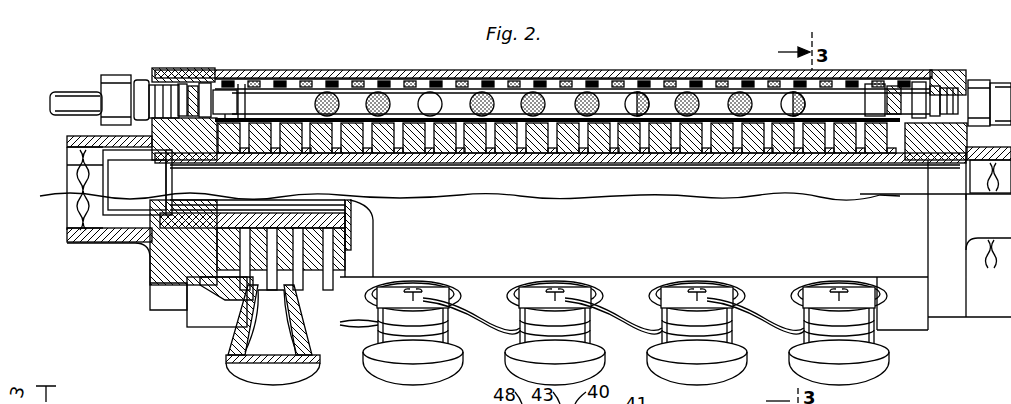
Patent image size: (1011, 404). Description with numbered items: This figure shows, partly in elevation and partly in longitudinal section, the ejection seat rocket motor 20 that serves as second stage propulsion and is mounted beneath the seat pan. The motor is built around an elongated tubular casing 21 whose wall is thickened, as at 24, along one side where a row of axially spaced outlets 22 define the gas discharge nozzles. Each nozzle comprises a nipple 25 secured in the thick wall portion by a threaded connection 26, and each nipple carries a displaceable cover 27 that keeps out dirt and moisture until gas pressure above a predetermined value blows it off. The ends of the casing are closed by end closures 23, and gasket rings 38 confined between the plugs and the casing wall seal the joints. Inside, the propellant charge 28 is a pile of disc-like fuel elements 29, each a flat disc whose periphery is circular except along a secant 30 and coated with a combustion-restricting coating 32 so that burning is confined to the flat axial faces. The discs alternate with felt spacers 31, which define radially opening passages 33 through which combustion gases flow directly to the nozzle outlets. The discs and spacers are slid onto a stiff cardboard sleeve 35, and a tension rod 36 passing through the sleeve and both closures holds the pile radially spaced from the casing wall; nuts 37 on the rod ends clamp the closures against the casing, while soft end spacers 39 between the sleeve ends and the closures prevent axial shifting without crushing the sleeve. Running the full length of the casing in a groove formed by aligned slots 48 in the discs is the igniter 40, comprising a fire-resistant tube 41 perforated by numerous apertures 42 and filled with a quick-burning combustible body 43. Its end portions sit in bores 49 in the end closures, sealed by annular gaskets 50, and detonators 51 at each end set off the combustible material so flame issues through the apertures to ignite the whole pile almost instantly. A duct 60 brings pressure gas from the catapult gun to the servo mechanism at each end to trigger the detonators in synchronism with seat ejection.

The rocket motor 20 is at (908, 302).
The tubular casing 21 is at (634, 307).
The outlets 22 is at (243, 333).
The end closures 23 is at (148, 296).
The thickened casing wall portion 24 is at (903, 322).
The nipples 25 is at (377, 327).
The threaded connection 26 is at (240, 300).
The displaceable cover 27 is at (274, 372).
The propellant charge 28 is at (207, 258).
The fuel elements 29 is at (293, 70).
The secant 30 is at (287, 310).
The spacers 31 is at (270, 146).
The coating 32 is at (603, 80).
The radially opening passages 33 is at (497, 128).
The sleeve 35 is at (917, 80).
The tension rod 36 is at (212, 196).
The nuts 37 is at (70, 166).
The gasket rings 38 is at (199, 78).
The end spacers 39 is at (213, 247).
The igniter 40 is at (276, 98).
The tube 41 is at (768, 100).
The apertures 42 is at (476, 92).
The combustible body 43 is at (681, 158).
The slot 48 is at (441, 78).
The bores 49 is at (225, 105).
The annular gaskets 50 is at (182, 83).
The detonators 51 is at (224, 80).
The duct 60 is at (74, 100).